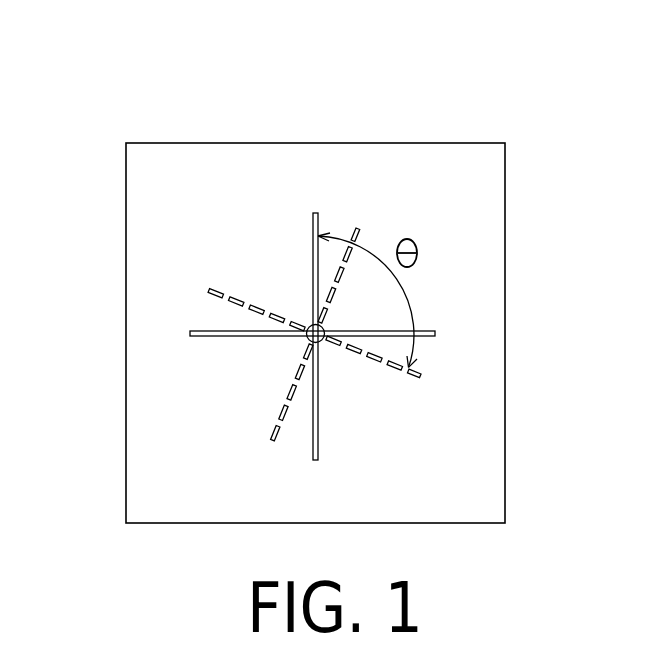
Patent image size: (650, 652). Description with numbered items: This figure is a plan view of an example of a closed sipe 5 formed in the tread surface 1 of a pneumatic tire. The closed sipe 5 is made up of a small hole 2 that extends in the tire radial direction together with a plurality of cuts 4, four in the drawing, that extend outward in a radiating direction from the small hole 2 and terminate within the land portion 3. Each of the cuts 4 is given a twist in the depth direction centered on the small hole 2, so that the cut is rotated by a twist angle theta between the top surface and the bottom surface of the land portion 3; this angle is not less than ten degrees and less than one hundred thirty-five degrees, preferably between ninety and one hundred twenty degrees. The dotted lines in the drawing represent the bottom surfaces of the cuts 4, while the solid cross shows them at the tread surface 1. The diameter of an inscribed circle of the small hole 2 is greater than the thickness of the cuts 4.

The tread surface 1 is at (493, 117).
The small hole 2 is at (312, 325).
The land portion 3 is at (475, 488).
The cuts 4 is at (313, 230).
The closed sipe 5 is at (230, 220).